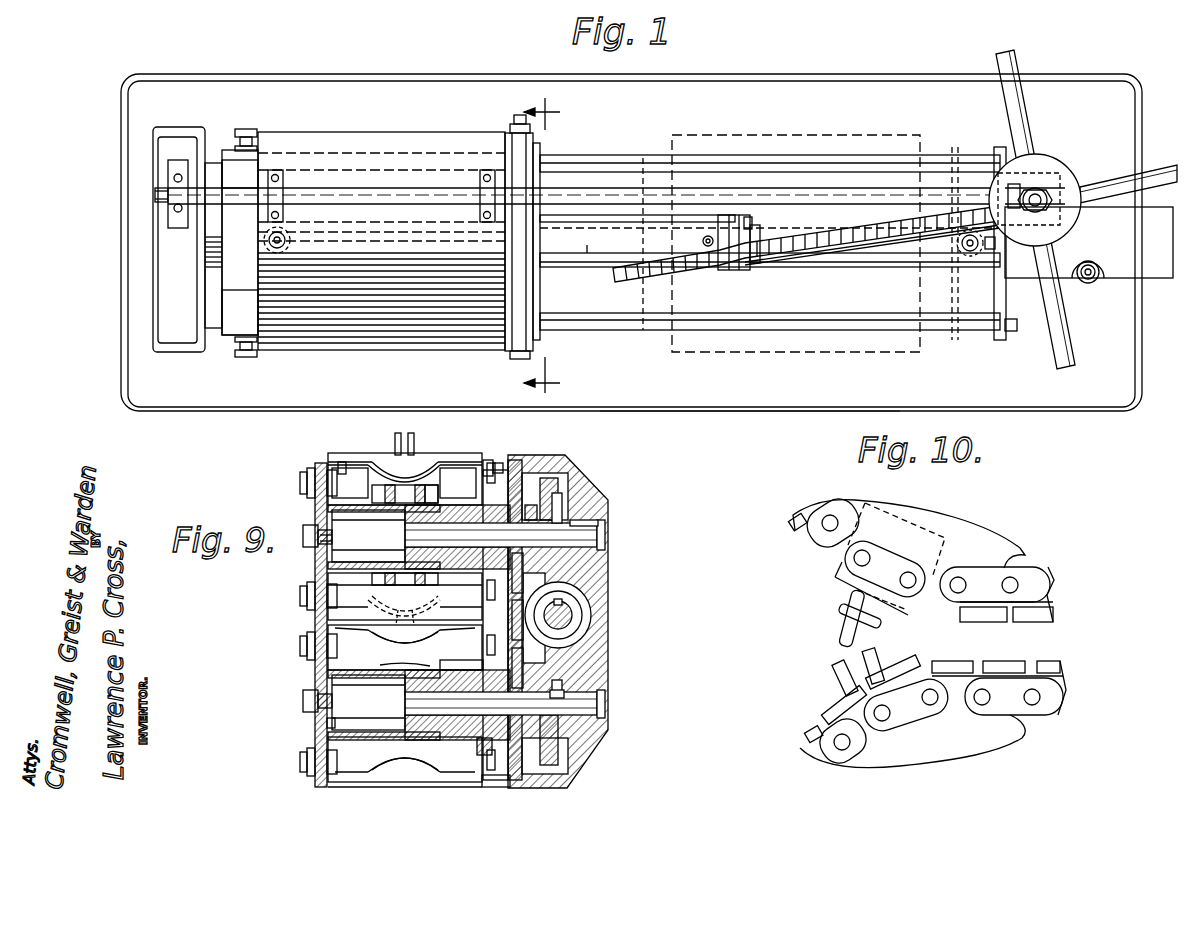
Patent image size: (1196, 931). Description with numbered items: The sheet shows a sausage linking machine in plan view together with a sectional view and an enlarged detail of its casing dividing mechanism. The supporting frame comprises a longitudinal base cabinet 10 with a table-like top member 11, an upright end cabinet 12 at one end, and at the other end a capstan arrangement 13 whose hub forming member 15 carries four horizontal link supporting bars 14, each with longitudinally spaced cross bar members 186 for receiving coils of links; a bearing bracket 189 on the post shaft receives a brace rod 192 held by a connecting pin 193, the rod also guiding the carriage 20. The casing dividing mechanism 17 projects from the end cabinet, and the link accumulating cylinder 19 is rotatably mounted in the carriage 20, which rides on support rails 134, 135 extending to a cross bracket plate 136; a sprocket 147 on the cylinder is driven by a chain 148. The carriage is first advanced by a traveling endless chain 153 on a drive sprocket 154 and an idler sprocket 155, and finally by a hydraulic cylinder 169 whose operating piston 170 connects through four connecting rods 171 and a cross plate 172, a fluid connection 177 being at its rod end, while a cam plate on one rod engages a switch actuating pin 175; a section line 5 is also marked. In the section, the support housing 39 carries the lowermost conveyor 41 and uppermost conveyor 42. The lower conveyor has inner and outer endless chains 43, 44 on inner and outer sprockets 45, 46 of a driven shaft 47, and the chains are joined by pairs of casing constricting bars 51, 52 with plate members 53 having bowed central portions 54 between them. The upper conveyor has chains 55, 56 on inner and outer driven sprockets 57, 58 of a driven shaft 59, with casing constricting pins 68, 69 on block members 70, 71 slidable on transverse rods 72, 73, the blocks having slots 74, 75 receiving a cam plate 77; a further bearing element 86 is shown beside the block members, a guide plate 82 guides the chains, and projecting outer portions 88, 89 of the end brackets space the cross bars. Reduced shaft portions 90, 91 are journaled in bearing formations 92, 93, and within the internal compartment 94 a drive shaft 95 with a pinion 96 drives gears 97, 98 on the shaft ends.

In FIG. 1, the base cabinet 10 is at (737, 74).
In FIG. 1, the top member 11 is at (736, 412).
In FIG. 1, the end cabinet 12 is at (178, 340).
In FIG. 1, the capstan arrangement 13 is at (1072, 168).
In FIG. 1, the link supporting bars 14 is at (998, 58).
In FIG. 1, the hub forming member 15 is at (1040, 155).
In FIG. 1, the casing dividing mechanism 17 is at (790, 258).
In FIG. 1, the link accumulating cylinder 19 is at (540, 292).
In FIG. 1, the carriage 20 is at (392, 350).
In FIG. 1, the support rail 134 is at (620, 330).
In FIG. 1, the support rail 135 is at (596, 160).
In FIG. 1, the cross bracket plate 136 is at (1010, 303).
In FIG. 1, the sprocket 147 is at (575, 253).
In FIG. 1, the chain 148 is at (545, 172).
In FIG. 1, the traveling endless chain 153 is at (864, 250).
In FIG. 1, the drive sprocket 154 is at (283, 250).
In FIG. 1, the idler sprocket 155 is at (967, 257).
In FIG. 1, the hydraulic cylinder 169 is at (587, 267).
In FIG. 1, the operating piston 170 is at (738, 215).
In FIG. 1, the connecting rods 171 is at (610, 215).
In FIG. 1, the cross plate 172 is at (754, 222).
In FIG. 1, the switch actuating pin 175 is at (1095, 282).
In FIG. 1, the fluid connection 177 is at (718, 218).
In FIG. 1, the cross bar members 186 is at (828, 246).
In FIG. 1, the bearing bracket 189 is at (1050, 206).
In FIG. 1, the brace rod 192 is at (840, 200).
In FIG. 1, the connecting pin 193 is at (1000, 172).
In FIG. 1, the section line 5 is at (545, 238).
In FIG. 9, the support housing 39 is at (590, 490).
In FIG. 9, the lowermost conveyor 41 is at (318, 713).
In FIG. 10, the lowermost conveyor 41 is at (912, 722).
In FIG. 9, the uppermost conveyor 42 is at (308, 566).
In FIG. 10, the uppermost conveyor 42 is at (830, 553).
In FIG. 9, the inner endless chain 43 is at (492, 776).
In FIG. 9, the outer endless chain 44 is at (330, 762).
In FIG. 9, the inner sprocket 45 is at (476, 748).
In FIG. 9, the outer sprocket 46 is at (318, 737).
In FIG. 9, the driven shaft 47 is at (345, 685).
In FIG. 9, the casing constricting bar 51 is at (340, 788).
In FIG. 10, the casing constricting bar 51 is at (832, 667).
In FIG. 9, the casing constricting bar 52 is at (362, 635).
In FIG. 10, the casing constricting bar 52 is at (876, 650).
In FIG. 9, the plate members 53 is at (435, 770).
In FIG. 9, the bowed central portion 54 is at (413, 648).
In FIG. 9, the inner endless chain 55 is at (495, 470).
In FIG. 9, the outer endless chain 56 is at (306, 466).
In FIG. 9, the inner driven sprocket 57 is at (527, 470).
In FIG. 9, the outer driven sprocket 58 is at (312, 492).
In FIG. 9, the driven shaft 59 is at (318, 552).
In FIG. 9, the casing constricting pin 68 is at (414, 480).
In FIG. 9, the casing constricting pin 69 is at (398, 445).
In FIG. 10, the casing constricting pin 69 is at (842, 636).
In FIG. 9, the block member 70 is at (455, 470).
In FIG. 9, the block member 71 is at (352, 460).
In FIG. 10, the block member 71 is at (907, 528).
In FIG. 9, the transverse rod 72 is at (337, 470).
In FIG. 9, the transverse rod 73 is at (330, 605).
In FIG. 9, the slot 74 is at (440, 493).
In FIG. 9, the slot 75 is at (378, 512).
In FIG. 9, the cam plate 77 is at (370, 590).
In FIG. 9, the guide plate 82 is at (400, 697).
In FIG. 9, the bearing 86 is at (404, 460).
In FIG. 9, the projecting outer portion 88 is at (490, 458).
In FIG. 9, the projecting outer portion 89 is at (338, 462).
In FIG. 10, the projecting outer portion 89 is at (838, 613).
In FIG. 9, the reduced shaft portion 90 is at (583, 697).
In FIG. 9, the reduced shaft portion 91 is at (590, 530).
In FIG. 9, the bearing formation 92 is at (455, 685).
In FIG. 9, the bearing formation 93 is at (455, 527).
In FIG. 9, the internal compartment 94 is at (556, 468).
In FIG. 9, the drive shaft 95 is at (572, 614).
In FIG. 9, the pinion 96 is at (578, 600).
In FIG. 9, the gear 97 is at (572, 733).
In FIG. 9, the gear 98 is at (576, 518).